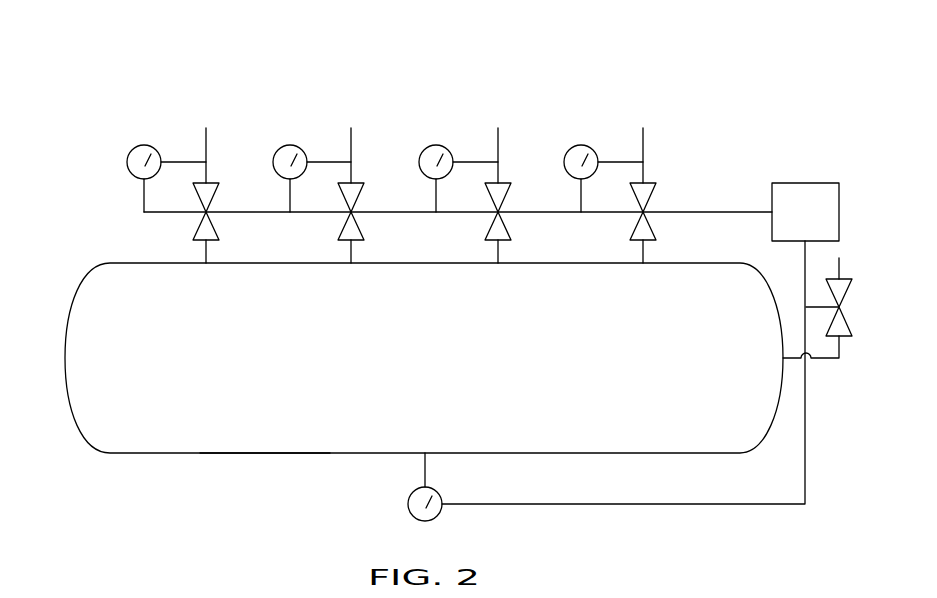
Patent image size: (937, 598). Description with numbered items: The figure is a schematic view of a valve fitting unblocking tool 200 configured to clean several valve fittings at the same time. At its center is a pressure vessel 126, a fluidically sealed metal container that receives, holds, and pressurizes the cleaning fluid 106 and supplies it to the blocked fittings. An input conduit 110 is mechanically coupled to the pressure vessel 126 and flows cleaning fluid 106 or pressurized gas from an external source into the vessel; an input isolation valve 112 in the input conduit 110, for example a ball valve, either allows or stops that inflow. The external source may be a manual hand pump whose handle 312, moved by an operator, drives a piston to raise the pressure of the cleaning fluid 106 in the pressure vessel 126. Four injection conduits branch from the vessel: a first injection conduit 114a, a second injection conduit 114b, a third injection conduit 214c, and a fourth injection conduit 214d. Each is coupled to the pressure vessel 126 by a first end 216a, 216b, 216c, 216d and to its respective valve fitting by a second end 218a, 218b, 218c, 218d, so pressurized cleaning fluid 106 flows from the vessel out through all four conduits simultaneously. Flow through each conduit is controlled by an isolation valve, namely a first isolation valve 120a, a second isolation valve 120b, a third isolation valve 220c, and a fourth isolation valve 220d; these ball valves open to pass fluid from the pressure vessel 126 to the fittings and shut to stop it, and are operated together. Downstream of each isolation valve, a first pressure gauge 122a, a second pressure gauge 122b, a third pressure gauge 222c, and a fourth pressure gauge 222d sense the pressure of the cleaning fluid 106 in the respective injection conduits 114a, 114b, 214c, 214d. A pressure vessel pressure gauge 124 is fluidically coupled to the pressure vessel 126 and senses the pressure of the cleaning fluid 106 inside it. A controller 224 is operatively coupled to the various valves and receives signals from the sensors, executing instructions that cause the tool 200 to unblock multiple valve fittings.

The valve fitting unblocking tool 200 is at (760, 62).
The cleaning fluid 106 is at (403, 373).
The input conduit 110 is at (841, 270).
The input isolation valve 112 is at (852, 318).
The first injection conduit 114a is at (204, 138).
The second injection conduit 114b is at (349, 140).
The third injection conduit 214c is at (500, 140).
The fourth injection conduit 214d is at (645, 140).
The first isolation valve 120a is at (192, 224).
The second isolation valve 120b is at (365, 224).
The third isolation valve 220c is at (512, 224).
The fourth isolation valve 220d is at (657, 224).
The first pressure gauge 122a is at (128, 156).
The second pressure gauge 122b is at (277, 150).
The third pressure gauge 222c is at (432, 146).
The fourth pressure gauge 222d is at (587, 146).
The pressure vessel pressure gauge 124 is at (408, 508).
The pressure vessel 126 is at (277, 456).
The first end of first injection conduit 216a is at (206, 272).
The first end of second injection conduit 216b is at (351, 272).
The first end of third injection conduit 216c is at (498, 272).
The first end of fourth injection conduit 216d is at (643, 272).
The second end of first injection conduit 218a is at (205, 124).
The second end of second injection conduit 218b is at (350, 124).
The second end of third injection conduit 218c is at (497, 124).
The second end of fourth injection conduit 218d is at (642, 124).
The controller 224 is at (784, 225).
The handle 312 is at (860, 581).